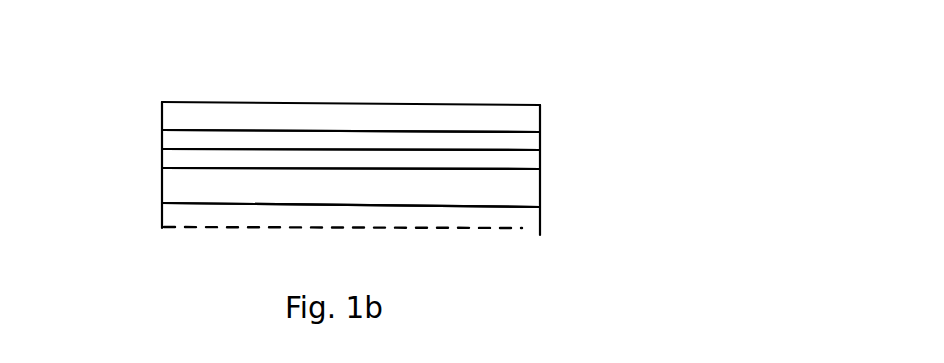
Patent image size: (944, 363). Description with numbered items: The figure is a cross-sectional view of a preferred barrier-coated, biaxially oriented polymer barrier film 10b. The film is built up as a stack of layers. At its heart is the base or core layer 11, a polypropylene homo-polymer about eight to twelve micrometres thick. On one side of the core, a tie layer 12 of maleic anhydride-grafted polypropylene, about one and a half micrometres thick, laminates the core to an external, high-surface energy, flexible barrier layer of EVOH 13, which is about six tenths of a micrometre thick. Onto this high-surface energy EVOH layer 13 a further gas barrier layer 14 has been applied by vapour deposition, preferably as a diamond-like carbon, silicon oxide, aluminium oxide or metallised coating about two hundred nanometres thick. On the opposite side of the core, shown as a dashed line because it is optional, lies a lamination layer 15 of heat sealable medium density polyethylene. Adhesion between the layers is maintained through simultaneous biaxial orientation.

The barrier-coated, biaxially oriented polymer barrier film 10b is at (281, 168).
The gas barrier layer 14 is at (522, 117).
The barrier layer of EVOH 13 is at (537, 138).
The tie layer 12 is at (527, 161).
The base or core layer 11 is at (535, 190).
The lamination layer 15 is at (522, 228).